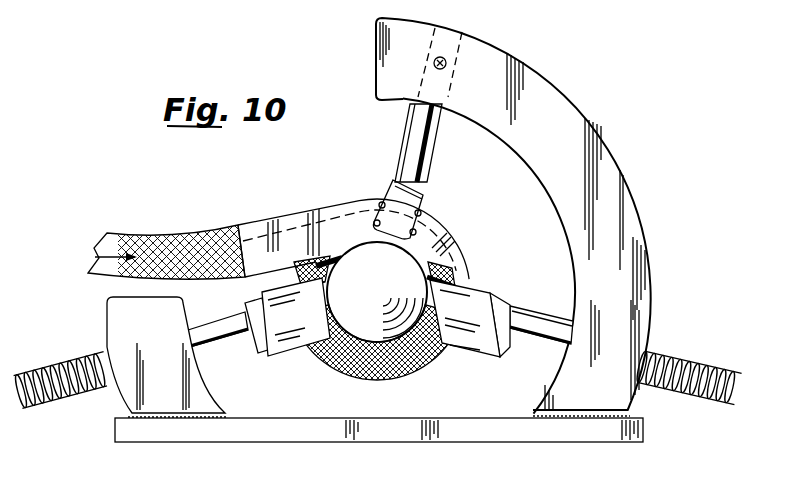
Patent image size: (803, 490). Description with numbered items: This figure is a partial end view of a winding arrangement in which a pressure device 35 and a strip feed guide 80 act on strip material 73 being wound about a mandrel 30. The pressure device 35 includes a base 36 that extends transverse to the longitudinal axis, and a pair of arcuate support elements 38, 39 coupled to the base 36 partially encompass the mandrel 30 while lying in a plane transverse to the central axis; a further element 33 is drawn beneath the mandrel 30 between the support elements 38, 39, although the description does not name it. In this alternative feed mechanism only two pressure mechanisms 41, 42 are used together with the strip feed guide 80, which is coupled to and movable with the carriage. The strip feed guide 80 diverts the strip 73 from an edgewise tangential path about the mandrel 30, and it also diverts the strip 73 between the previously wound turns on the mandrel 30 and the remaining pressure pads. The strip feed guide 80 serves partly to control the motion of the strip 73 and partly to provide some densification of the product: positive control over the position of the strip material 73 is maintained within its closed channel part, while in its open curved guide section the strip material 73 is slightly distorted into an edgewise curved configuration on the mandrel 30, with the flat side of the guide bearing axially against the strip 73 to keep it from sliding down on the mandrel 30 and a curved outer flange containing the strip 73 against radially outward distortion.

The mandrel 30 is at (425, 271).
The packing 33 is at (423, 366).
The pressure device 35 is at (592, 97).
The base 36 is at (290, 418).
The arcuate support element 38 is at (104, 317).
The arcuate support element 39 is at (622, 175).
The pressure mechanism 41 is at (510, 286).
The pressure mechanism 42 is at (238, 354).
The strip material 73 is at (150, 238).
The strip feed guide 80 is at (320, 198).